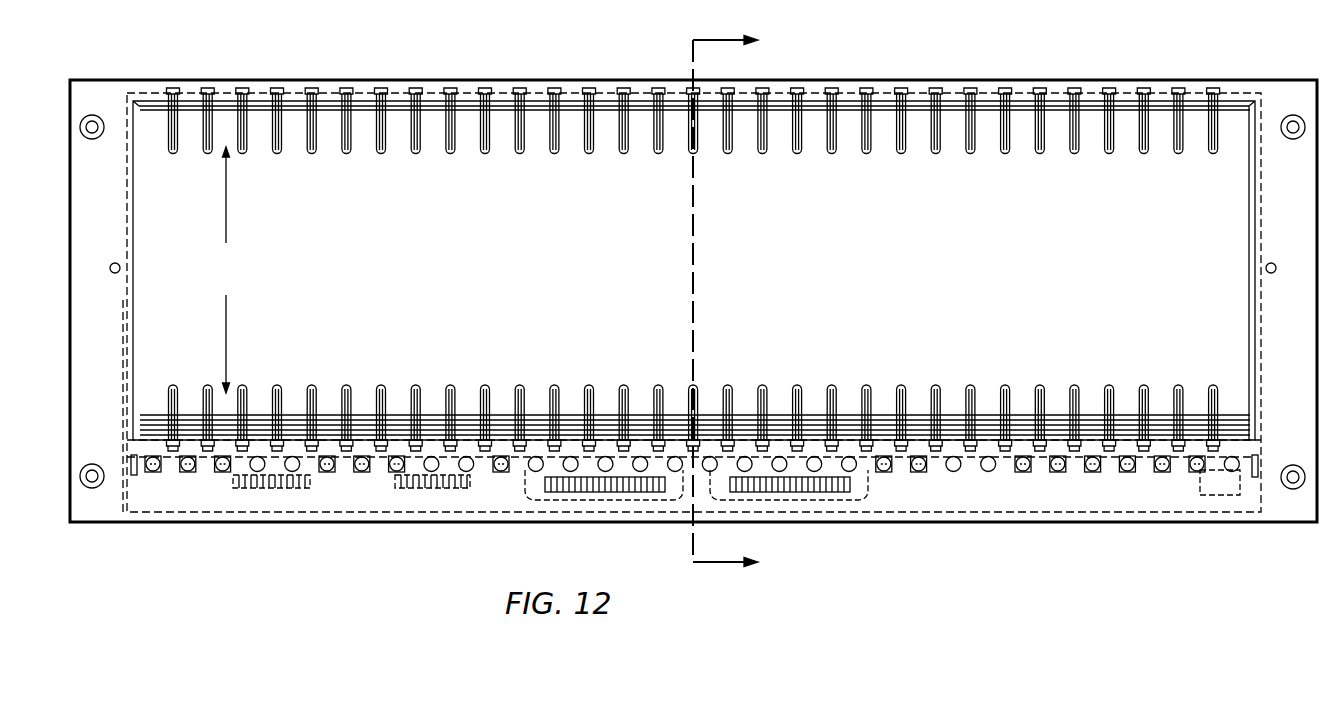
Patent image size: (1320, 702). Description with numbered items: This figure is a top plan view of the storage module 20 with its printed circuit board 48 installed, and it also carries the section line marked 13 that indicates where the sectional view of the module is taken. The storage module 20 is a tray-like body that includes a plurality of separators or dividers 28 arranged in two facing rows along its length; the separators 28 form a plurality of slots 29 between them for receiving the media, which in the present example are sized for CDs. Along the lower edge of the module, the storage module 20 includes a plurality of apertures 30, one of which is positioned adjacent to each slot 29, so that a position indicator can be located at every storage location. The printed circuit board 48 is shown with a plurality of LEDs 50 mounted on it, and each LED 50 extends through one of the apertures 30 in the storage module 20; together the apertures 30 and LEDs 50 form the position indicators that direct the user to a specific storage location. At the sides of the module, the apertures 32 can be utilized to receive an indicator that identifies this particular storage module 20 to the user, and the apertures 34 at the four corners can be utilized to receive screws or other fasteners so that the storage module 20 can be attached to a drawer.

The storage module 20 is at (1282, 515).
The apertures 34 is at (92, 115).
The apertures 32 is at (119, 265).
The separators 28 is at (248, 154).
The slots 29 is at (227, 270).
The section line 13- 13 is at (741, 302).
The printed circuit board 48 is at (447, 500).
The LEDs 50 is at (224, 473).
The apertures 30 is at (326, 473).